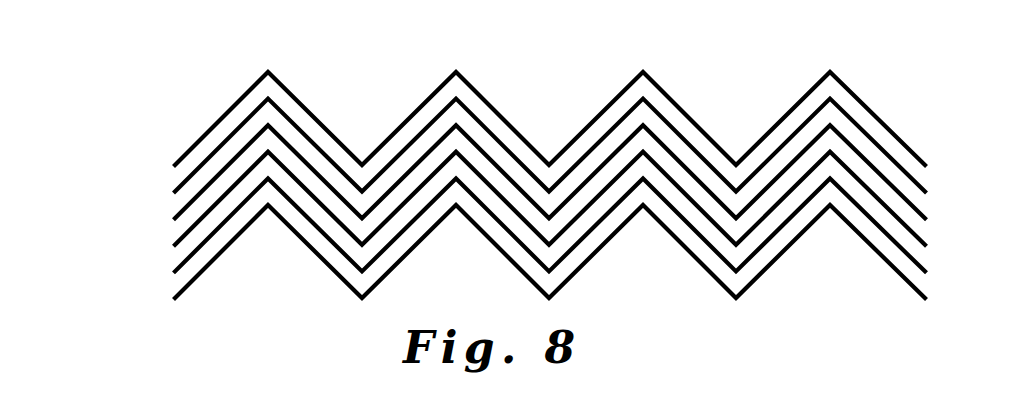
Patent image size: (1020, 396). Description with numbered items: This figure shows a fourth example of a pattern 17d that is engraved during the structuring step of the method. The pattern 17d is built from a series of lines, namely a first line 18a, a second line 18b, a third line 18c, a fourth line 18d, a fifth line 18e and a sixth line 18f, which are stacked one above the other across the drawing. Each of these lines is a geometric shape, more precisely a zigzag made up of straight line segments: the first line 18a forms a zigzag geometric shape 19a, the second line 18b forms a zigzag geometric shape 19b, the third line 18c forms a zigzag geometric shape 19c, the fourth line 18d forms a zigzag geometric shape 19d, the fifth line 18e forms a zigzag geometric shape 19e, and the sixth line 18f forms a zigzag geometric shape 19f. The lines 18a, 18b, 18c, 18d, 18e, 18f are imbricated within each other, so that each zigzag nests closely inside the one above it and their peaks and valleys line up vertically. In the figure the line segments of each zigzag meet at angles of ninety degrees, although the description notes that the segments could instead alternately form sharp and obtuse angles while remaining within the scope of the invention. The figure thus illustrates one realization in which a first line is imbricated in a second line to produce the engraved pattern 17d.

The pattern 17d is at (766, 56).
The line 18a is at (476, 118).
The geometric shape 19a is at (177, 164).
The line 18b is at (476, 145).
The geometric shape 19b is at (177, 191).
The line 18c is at (477, 171).
The geometric shape 19c is at (177, 218).
The line 18d is at (476, 198).
The geometric shape 19d is at (177, 245).
The line 18e is at (476, 225).
The geometric shape 19e is at (177, 272).
The line 18f is at (483, 251).
The geometric shape 19f is at (177, 298).